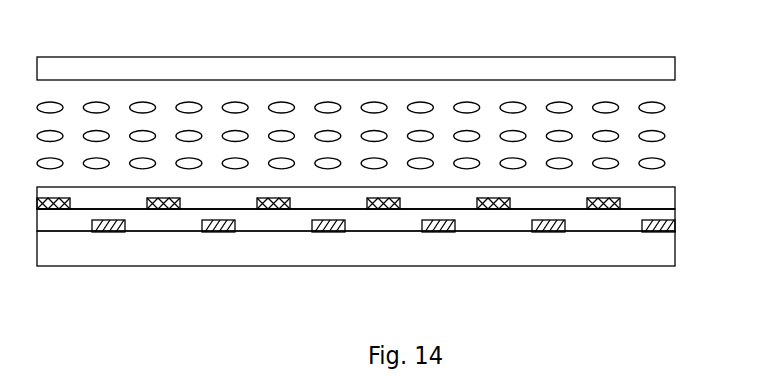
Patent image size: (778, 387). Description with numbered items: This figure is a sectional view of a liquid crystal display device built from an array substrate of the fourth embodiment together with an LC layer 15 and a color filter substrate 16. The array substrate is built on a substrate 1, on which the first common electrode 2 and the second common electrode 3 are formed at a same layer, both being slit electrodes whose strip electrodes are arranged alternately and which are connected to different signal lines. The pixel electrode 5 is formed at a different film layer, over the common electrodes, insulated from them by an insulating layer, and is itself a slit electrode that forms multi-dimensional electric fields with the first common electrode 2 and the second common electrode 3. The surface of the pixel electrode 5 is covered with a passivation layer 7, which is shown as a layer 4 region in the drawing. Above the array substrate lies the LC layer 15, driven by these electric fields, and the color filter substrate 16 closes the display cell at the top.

The substrate 1 is at (657, 253).
The first common electrode 2 is at (552, 228).
The second common electrode 3 is at (673, 226).
The planarization layer 4 is at (665, 214).
The pixel electrode 5 is at (605, 199).
The passivation layer 7 is at (523, 202).
The LC layer 15 is at (683, 133).
The color filter substrate 16 is at (667, 66).